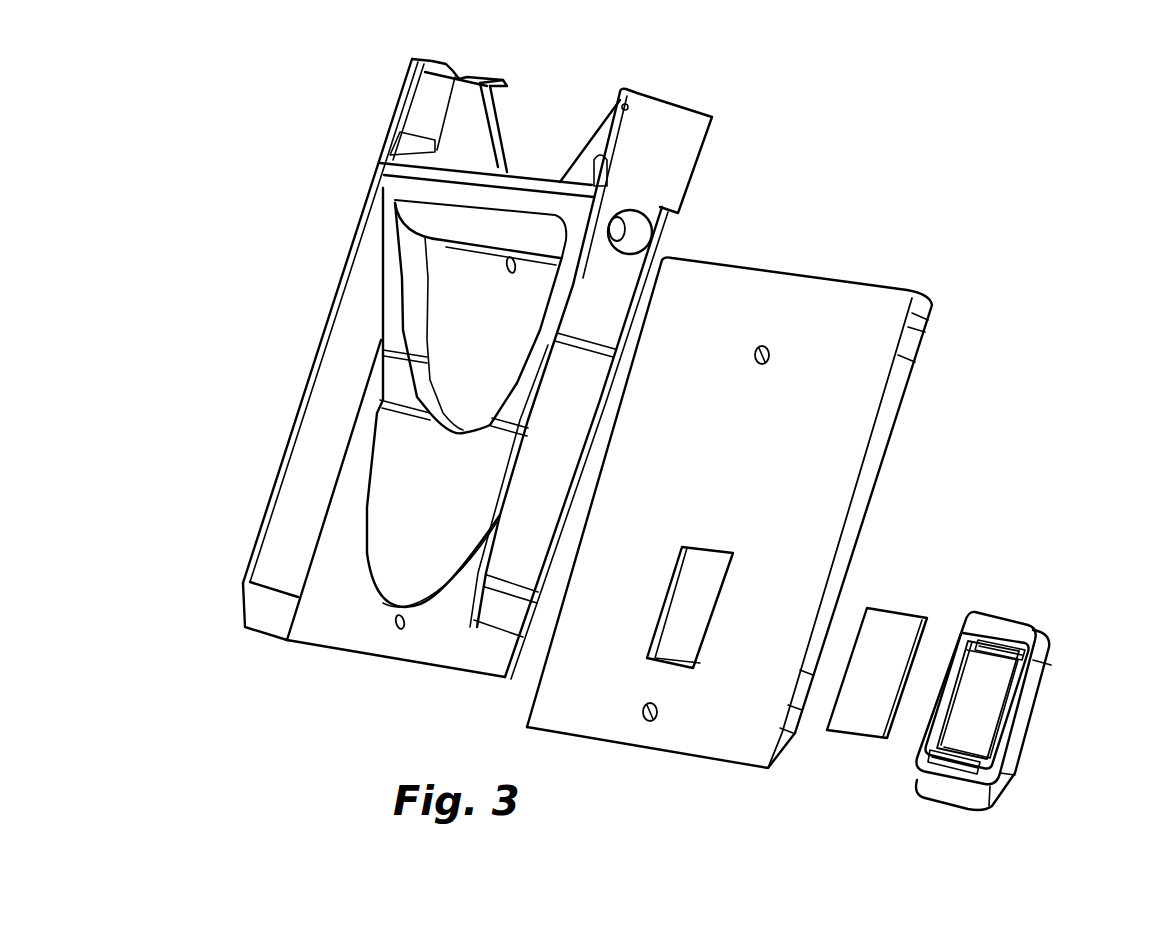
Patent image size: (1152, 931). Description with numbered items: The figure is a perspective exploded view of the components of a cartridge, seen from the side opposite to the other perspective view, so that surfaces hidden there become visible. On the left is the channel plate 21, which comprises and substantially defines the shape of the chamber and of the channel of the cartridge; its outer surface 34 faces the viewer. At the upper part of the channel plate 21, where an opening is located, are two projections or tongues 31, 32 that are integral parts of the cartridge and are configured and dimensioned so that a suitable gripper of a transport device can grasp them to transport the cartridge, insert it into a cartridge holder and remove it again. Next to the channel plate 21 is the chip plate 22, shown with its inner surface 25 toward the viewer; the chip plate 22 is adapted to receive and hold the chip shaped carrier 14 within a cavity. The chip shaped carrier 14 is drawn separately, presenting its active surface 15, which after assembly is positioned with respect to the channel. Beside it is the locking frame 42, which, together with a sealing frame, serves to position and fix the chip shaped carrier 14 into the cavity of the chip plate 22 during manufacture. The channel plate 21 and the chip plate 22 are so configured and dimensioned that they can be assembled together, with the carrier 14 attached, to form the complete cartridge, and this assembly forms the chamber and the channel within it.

The channel plate 21 is at (327, 330).
The chip plate 22 is at (890, 437).
The inner surface of chip plate 25 is at (685, 727).
The projection or tongue 31 is at (612, 122).
The projection or tongue 32 is at (458, 72).
The outer surface of channel plate 34 is at (370, 630).
The chip shaped carrier 14 is at (897, 612).
The active surface of chip shaped carrier 15 is at (872, 707).
The locking frame 42 is at (1053, 650).